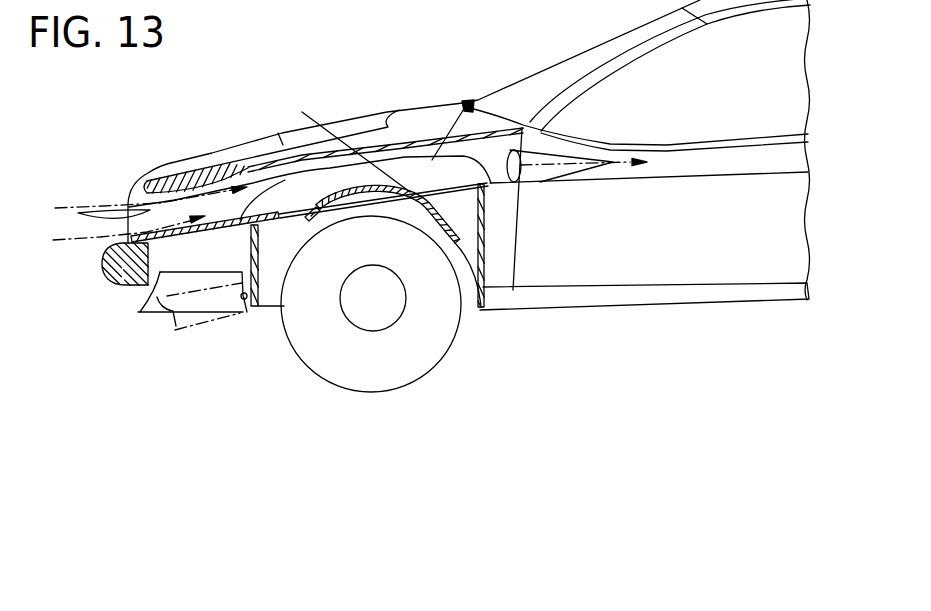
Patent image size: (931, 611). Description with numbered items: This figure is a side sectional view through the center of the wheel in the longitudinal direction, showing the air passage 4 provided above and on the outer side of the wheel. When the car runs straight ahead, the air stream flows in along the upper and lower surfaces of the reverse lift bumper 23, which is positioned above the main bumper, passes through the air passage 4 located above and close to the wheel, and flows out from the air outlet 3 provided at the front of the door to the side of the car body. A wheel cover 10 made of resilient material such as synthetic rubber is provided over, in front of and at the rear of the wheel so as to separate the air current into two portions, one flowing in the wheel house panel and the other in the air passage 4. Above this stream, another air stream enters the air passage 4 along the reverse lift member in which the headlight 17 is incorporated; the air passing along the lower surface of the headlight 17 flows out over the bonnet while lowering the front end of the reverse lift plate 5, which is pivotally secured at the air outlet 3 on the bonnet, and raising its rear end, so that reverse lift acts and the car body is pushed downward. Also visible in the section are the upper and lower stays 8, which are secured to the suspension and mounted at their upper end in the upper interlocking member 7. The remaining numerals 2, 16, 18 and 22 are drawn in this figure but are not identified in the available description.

The front bumper / nose spoiler 2 is at (104, 245).
The air outlet 3 is at (388, 125).
The air passage 4 is at (476, 100).
The reverse lift plate 5 is at (363, 123).
The upper interlocking member 7 is at (445, 232).
The stays 8 is at (425, 226).
The wheel cover 10 is at (307, 203).
The vehicle body / hood 16 is at (431, 120).
The headlight 17 is at (203, 158).
The movable flap 18 is at (168, 318).
The pivot 22 is at (244, 306).
The reverse lift bumper 23 is at (73, 226).